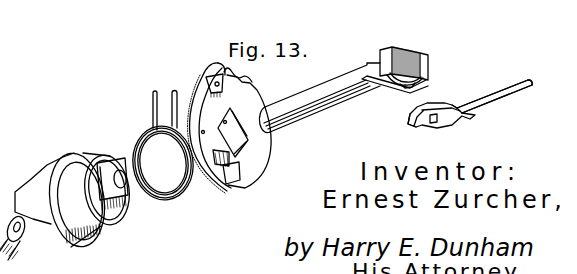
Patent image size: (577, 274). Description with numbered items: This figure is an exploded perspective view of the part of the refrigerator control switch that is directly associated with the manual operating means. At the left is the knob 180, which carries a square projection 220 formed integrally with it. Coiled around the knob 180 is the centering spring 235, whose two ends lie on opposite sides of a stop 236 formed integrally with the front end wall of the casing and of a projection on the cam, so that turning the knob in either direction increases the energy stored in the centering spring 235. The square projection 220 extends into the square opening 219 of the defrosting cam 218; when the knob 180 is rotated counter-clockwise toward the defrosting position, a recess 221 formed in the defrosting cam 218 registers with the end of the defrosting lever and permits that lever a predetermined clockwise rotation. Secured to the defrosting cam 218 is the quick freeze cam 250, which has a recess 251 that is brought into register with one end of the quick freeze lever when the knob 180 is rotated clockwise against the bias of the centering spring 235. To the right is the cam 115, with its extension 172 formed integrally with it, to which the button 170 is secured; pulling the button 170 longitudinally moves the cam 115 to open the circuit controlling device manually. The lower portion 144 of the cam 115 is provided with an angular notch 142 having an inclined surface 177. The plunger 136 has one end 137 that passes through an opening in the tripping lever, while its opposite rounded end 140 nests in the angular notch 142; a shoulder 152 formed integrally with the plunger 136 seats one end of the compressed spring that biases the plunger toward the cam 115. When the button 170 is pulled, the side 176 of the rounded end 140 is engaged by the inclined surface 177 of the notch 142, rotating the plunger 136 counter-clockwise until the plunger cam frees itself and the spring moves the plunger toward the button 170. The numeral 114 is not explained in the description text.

The block 114 is at (378, 51).
The cam 115 is at (404, 48).
The plunger 136 is at (495, 101).
The end of plunger 137 is at (530, 86).
The rounded end 140 is at (462, 113).
The angular notch 142 is at (413, 80).
The lower portion 144 is at (388, 87).
The shoulder 152 is at (457, 105).
The button 170 is at (19, 246).
The extension 172 is at (300, 97).
The side of rounded plunger end 176 is at (420, 109).
The inclined surface 177 is at (418, 86).
The knob 180 is at (50, 161).
The defrosting cam 218 is at (272, 149).
The square opening 219 is at (235, 118).
The square projection 220 is at (95, 156).
The recess 221 is at (230, 184).
The centering spring 235 is at (170, 199).
The stop 236 is at (250, 78).
The quick freeze cam 250 is at (212, 64).
The recess 251 is at (208, 80).